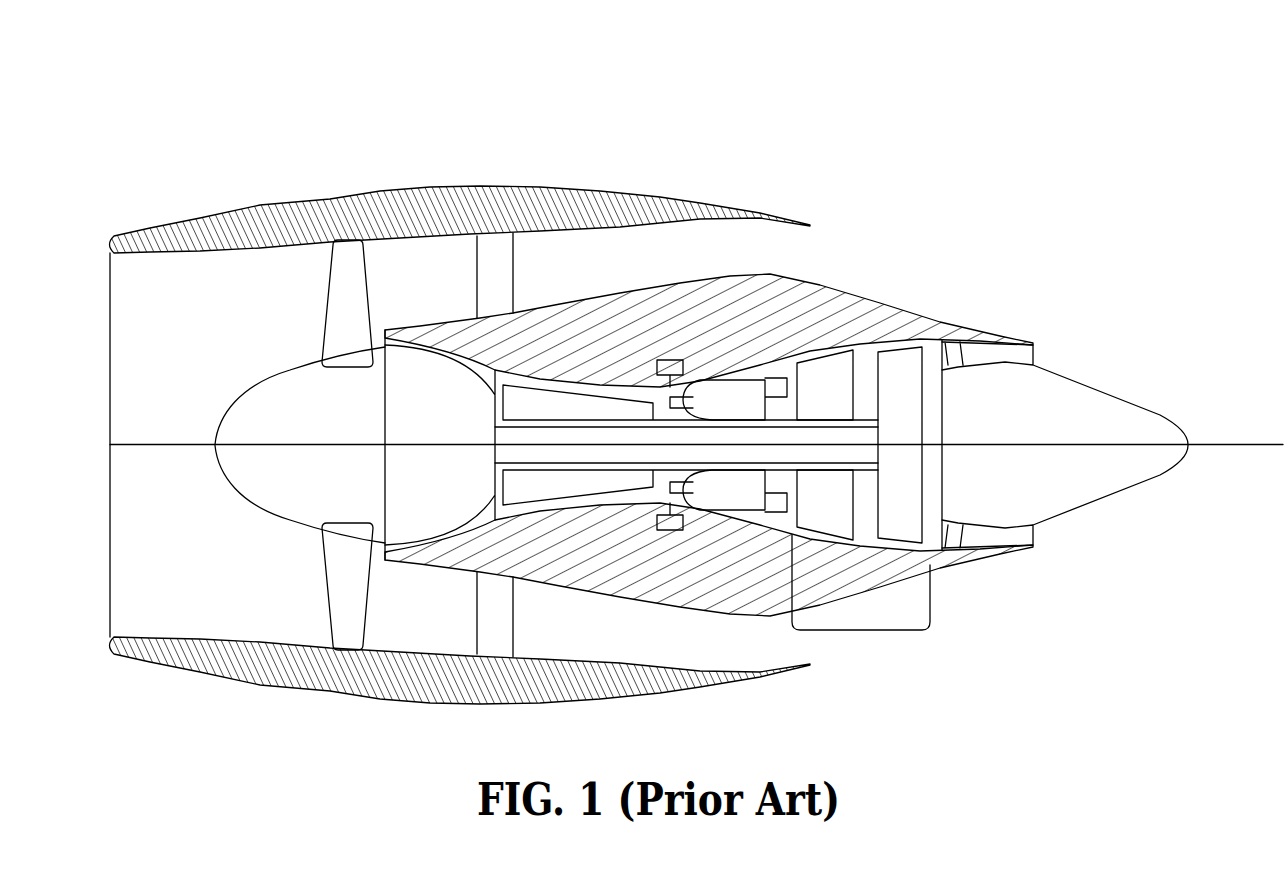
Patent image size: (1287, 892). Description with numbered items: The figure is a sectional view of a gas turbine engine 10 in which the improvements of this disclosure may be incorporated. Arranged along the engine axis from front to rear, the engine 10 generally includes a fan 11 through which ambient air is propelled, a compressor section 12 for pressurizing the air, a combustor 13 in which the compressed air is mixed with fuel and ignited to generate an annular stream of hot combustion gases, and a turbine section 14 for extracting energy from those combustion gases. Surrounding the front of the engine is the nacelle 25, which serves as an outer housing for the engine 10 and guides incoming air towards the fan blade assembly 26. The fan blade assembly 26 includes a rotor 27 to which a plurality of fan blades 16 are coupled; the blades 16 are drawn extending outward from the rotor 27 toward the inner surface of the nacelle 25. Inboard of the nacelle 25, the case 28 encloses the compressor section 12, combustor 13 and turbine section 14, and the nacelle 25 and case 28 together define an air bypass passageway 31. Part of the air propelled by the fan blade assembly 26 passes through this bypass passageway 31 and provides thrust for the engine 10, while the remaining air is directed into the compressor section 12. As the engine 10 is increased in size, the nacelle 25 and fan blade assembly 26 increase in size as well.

The gas turbine engine 10 is at (932, 218).
The fan 11 is at (312, 573).
The compressor section 12 is at (543, 410).
The combustor 13 is at (725, 397).
The turbine section 14 is at (860, 630).
The fan blades 16 is at (350, 295).
The nacelle 25 is at (277, 200).
The fan blade assembly 26 is at (220, 475).
The rotor 27 is at (273, 382).
The case 28 is at (695, 288).
The air bypass passageway 31 is at (447, 263).